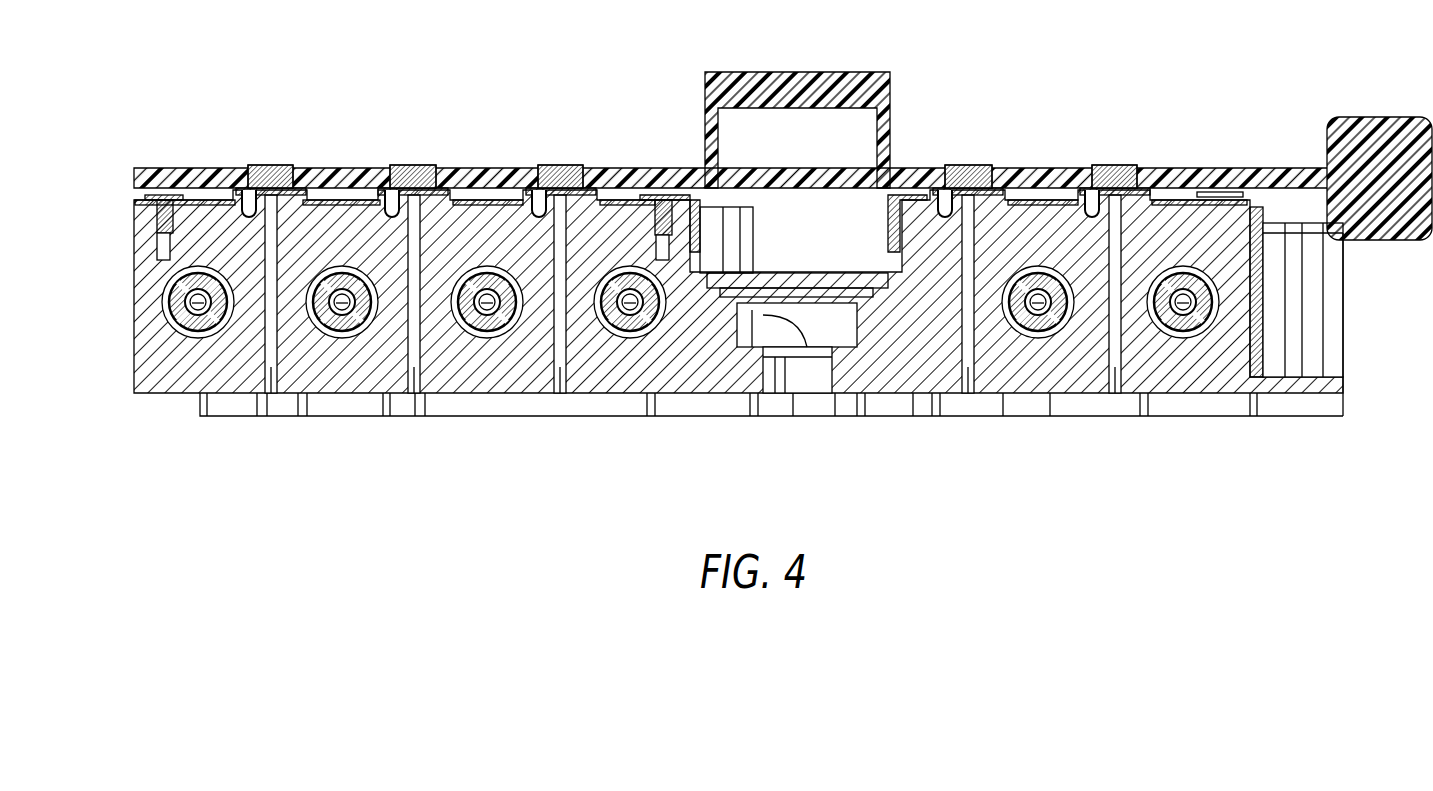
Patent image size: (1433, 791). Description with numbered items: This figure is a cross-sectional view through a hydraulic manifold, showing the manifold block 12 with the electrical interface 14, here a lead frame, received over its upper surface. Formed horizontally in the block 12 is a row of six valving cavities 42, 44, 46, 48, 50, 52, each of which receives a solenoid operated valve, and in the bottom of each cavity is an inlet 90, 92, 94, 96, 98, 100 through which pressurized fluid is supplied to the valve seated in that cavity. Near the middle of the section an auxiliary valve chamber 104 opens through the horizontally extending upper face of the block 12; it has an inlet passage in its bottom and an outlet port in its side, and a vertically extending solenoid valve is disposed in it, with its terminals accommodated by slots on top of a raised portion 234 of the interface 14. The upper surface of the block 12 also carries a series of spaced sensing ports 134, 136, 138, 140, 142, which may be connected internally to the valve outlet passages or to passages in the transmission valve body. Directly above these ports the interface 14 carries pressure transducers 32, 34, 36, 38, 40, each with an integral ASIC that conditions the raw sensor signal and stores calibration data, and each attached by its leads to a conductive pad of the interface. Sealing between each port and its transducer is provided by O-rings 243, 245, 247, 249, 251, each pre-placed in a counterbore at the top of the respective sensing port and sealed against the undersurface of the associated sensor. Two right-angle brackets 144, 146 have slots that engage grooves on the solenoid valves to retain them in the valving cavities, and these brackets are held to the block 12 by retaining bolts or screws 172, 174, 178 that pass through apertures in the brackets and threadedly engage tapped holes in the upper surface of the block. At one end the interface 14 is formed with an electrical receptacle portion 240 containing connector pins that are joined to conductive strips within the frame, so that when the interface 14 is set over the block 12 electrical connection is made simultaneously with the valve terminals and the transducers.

The manifold block 12 is at (153, 396).
The electrical interface 14 is at (195, 152).
The pressure transducer 32 is at (275, 168).
The pressure transducer 34 is at (415, 168).
The pressure transducer 36 is at (565, 168).
The pressure transducer 38 is at (972, 168).
The pressure transducer 40 is at (1118, 168).
The valving cavity 42 is at (198, 336).
The valving cavity 44 is at (342, 336).
The valving cavity 46 is at (487, 336).
The valving cavity 48 is at (630, 336).
The valving cavity 50 is at (1038, 336).
The valving cavity 52 is at (1183, 336).
The inlet 90 is at (215, 318).
The inlet 92 is at (359, 318).
The inlet 94 is at (504, 318).
The inlet 96 is at (647, 318).
The inlet 98 is at (1055, 318).
The inlet 100 is at (1201, 318).
The auxiliary valve chamber 104 is at (803, 345).
The sensing port 134 is at (272, 414).
The sensing port 136 is at (416, 414).
The sensing port 138 is at (561, 414).
The sensing port 140 is at (969, 414).
The sensing port 142 is at (1116, 414).
The bracket 144 is at (483, 200).
The bracket 146 is at (1027, 198).
The retaining bolt 172 is at (165, 198).
The retaining bolt 174 is at (666, 205).
The retaining bolt 178 is at (1222, 190).
The raised portion 234 is at (805, 70).
The electrical receptacle portion 240 is at (1375, 117).
The O-ring 243 is at (250, 198).
The O-ring 245 is at (392, 198).
The O-ring 247 is at (538, 198).
The O-ring 249 is at (945, 198).
The O-ring 251 is at (1090, 198).